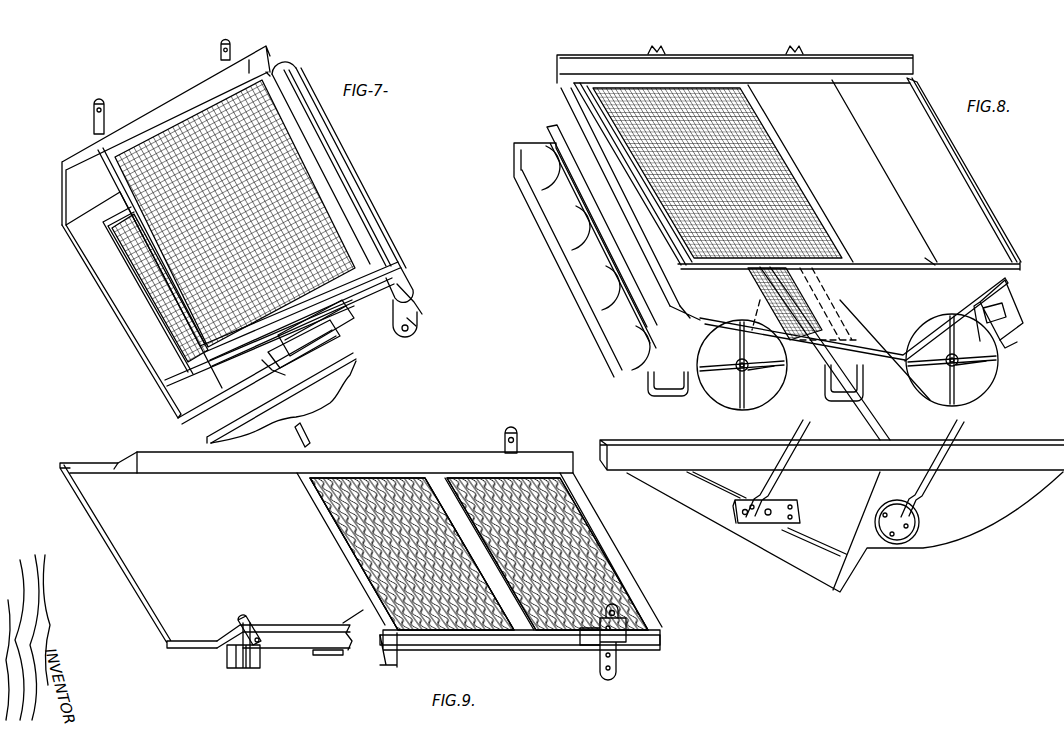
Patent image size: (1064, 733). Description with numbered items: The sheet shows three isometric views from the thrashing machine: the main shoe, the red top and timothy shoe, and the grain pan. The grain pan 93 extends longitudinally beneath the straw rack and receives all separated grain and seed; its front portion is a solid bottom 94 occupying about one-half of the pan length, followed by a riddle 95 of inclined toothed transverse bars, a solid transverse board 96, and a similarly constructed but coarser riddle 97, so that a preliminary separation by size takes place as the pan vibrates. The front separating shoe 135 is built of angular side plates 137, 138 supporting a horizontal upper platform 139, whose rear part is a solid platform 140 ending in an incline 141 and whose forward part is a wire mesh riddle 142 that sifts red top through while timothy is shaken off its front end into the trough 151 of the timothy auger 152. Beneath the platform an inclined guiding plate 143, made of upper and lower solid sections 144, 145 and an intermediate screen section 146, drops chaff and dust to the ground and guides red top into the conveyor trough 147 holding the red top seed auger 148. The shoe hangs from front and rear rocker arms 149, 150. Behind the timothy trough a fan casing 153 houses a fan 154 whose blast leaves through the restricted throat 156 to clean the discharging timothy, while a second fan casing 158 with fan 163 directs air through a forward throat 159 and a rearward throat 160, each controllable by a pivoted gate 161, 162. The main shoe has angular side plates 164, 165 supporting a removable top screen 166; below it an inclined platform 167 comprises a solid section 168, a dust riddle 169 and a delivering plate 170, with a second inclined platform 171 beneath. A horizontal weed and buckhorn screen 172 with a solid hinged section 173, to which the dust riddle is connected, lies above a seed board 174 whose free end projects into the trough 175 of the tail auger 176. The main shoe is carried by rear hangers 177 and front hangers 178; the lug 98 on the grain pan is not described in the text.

In FIG. 9, the grain pan 93 is at (200, 643).
In FIG. 9, the solid bottom 94 is at (310, 617).
In FIG. 9, the riddle 95 is at (473, 627).
In FIG. 9, the solid transverse board 96 is at (540, 638).
In FIG. 9, the riddle 97 is at (572, 637).
In FIG. 9, the hinge lug 98 is at (620, 667).
In FIG. 8, the front separating shoe 135 is at (968, 168).
In FIG. 8, the angular side plate 137 is at (995, 440).
In FIG. 8, the angular side plate 138 is at (915, 64).
In FIG. 8, the upper platform 139 is at (933, 264).
In FIG. 8, the solid platform 140 is at (903, 238).
In FIG. 8, the incline 141 is at (925, 146).
In FIG. 8, the wire mesh riddle 142 is at (790, 200).
In FIG. 8, the inclined guiding plate 143 is at (700, 300).
In FIG. 8, the upper solid section 144 is at (800, 289).
In FIG. 8, the lower solid section 145 is at (830, 280).
In FIG. 8, the screen section 146 is at (803, 332).
In FIG. 8, the conveyor trough 147 is at (848, 398).
In FIG. 8, the red top seed auger 148 is at (868, 375).
In FIG. 8, the front rocker arm 149 is at (660, 55).
In FIG. 8, the rear rocker arm 150 is at (795, 52).
In FIG. 8, the trough 151 is at (658, 400).
In FIG. 8, the timothy auger 152 is at (700, 392).
In FIG. 8, the fan casing 153 is at (748, 400).
In FIG. 8, the fan 154 is at (752, 390).
In FIG. 8, the throat 156 is at (700, 362).
In FIG. 8, the second fan casing 158 is at (1000, 372).
In FIG. 8, the throat 159 is at (945, 356).
In FIG. 8, the throat 160 is at (1000, 298).
In FIG. 8, the gate 161 is at (868, 372).
In FIG. 8, the gate 162 is at (1012, 328).
In FIG. 8, the fan 163 is at (992, 388).
In FIG. 7, the angular side plate 164 is at (340, 388).
In FIG. 7, the angular side plate 165 is at (180, 97).
In FIG. 7, the top screen 166 is at (315, 214).
In FIG. 7, the inclined platform 167 is at (305, 333).
In FIG. 7, the solid section 168 is at (316, 326).
In FIG. 7, the dust riddle 169 is at (162, 383).
In FIG. 7, the delivering plate 170 is at (157, 356).
In FIG. 7, the inclined platform 171 is at (352, 313).
In FIG. 7, the weed and buckhorn screen 172 is at (388, 337).
In FIG. 7, the hinged section 173 is at (227, 393).
In FIG. 7, the seed board 174 is at (400, 298).
In FIG. 7, the trough 175 is at (420, 317).
In FIG. 7, the tail auger 176 is at (414, 331).
In FIG. 7, the hanger 177 is at (94, 128).
In FIG. 7, the hanger 178 is at (220, 47).